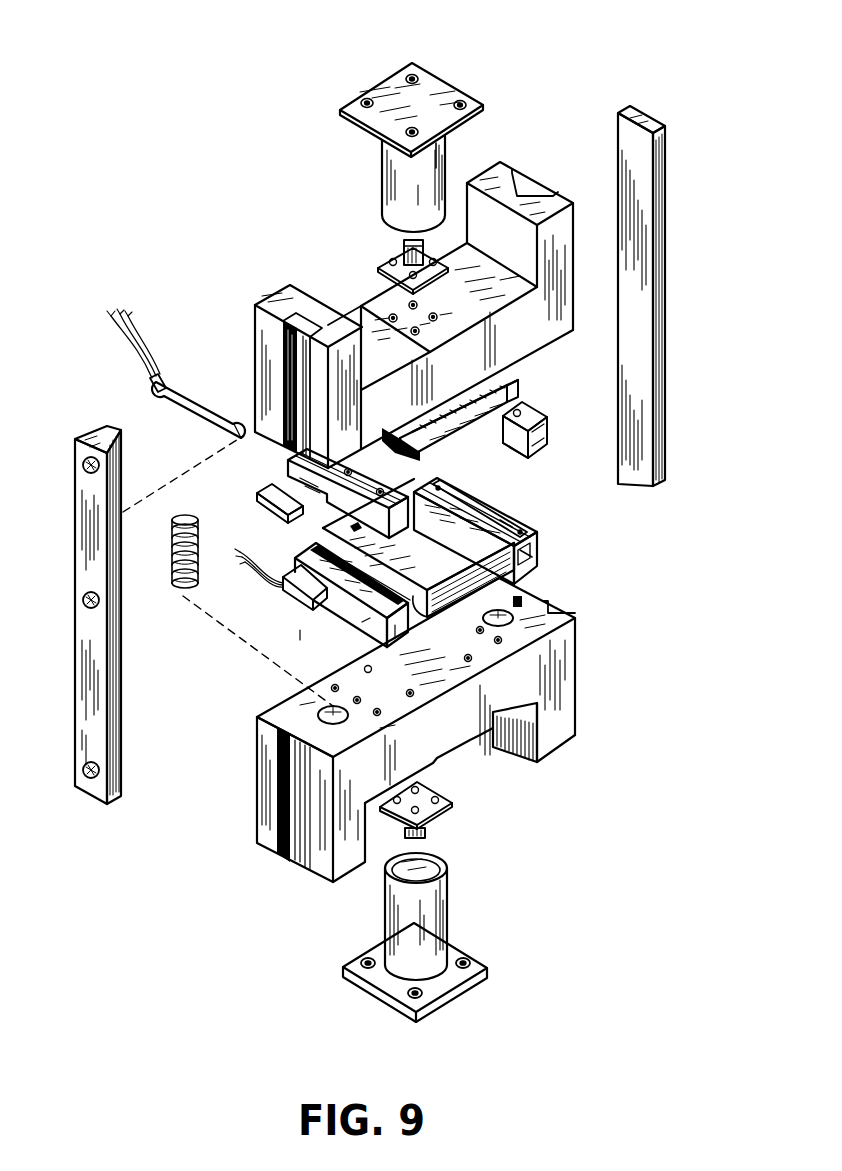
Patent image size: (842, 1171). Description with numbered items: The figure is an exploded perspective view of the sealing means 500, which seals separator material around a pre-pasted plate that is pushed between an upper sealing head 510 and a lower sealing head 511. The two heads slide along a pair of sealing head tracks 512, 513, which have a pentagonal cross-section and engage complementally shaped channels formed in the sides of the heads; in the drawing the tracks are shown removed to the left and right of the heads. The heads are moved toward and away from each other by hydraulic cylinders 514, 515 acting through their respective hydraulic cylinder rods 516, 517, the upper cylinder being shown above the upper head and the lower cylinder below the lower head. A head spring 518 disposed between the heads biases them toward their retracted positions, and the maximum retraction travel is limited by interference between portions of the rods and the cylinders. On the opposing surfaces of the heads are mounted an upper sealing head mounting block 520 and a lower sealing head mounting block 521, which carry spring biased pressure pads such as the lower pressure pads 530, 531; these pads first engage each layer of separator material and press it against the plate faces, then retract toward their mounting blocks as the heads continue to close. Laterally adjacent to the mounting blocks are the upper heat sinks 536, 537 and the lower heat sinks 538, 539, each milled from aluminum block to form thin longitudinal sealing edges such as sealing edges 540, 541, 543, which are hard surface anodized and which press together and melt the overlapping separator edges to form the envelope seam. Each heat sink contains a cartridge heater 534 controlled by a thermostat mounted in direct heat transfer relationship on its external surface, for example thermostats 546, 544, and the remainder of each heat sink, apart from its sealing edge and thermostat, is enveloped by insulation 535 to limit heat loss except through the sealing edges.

The sealing means 500 is at (597, 78).
The upper sealing head 510 is at (547, 328).
The lower sealing head 511 is at (568, 713).
The sealing head track 512 is at (89, 628).
The sealing head track 513 is at (659, 385).
The hydraulic cylinder 514 is at (443, 170).
The hydraulic cylinder 515 is at (432, 925).
The hydraulic cylinder rod 516 is at (388, 262).
The hydraulic cylinder rod 517 is at (426, 829).
The head spring 518 is at (169, 562).
The upper sealing head mounting block 520 is at (508, 375).
The lower sealing head mounting block 521 is at (520, 592).
The lower pressure pad 530 is at (348, 530).
The lower pressure pad 531 is at (477, 537).
The cartridge heater 534 is at (208, 408).
The insulation 535 is at (527, 415).
The upper heat sink 536 is at (415, 500).
The upper heat sink 537 is at (543, 432).
The lower heat sink 538 is at (368, 667).
The lower heat sink 539 is at (533, 556).
The sealing edge 540 is at (333, 620).
The sealing edge 541 is at (508, 522).
The sealing edge 543 is at (523, 459).
The thermostat 544 is at (290, 587).
The thermostat 546 is at (260, 508).